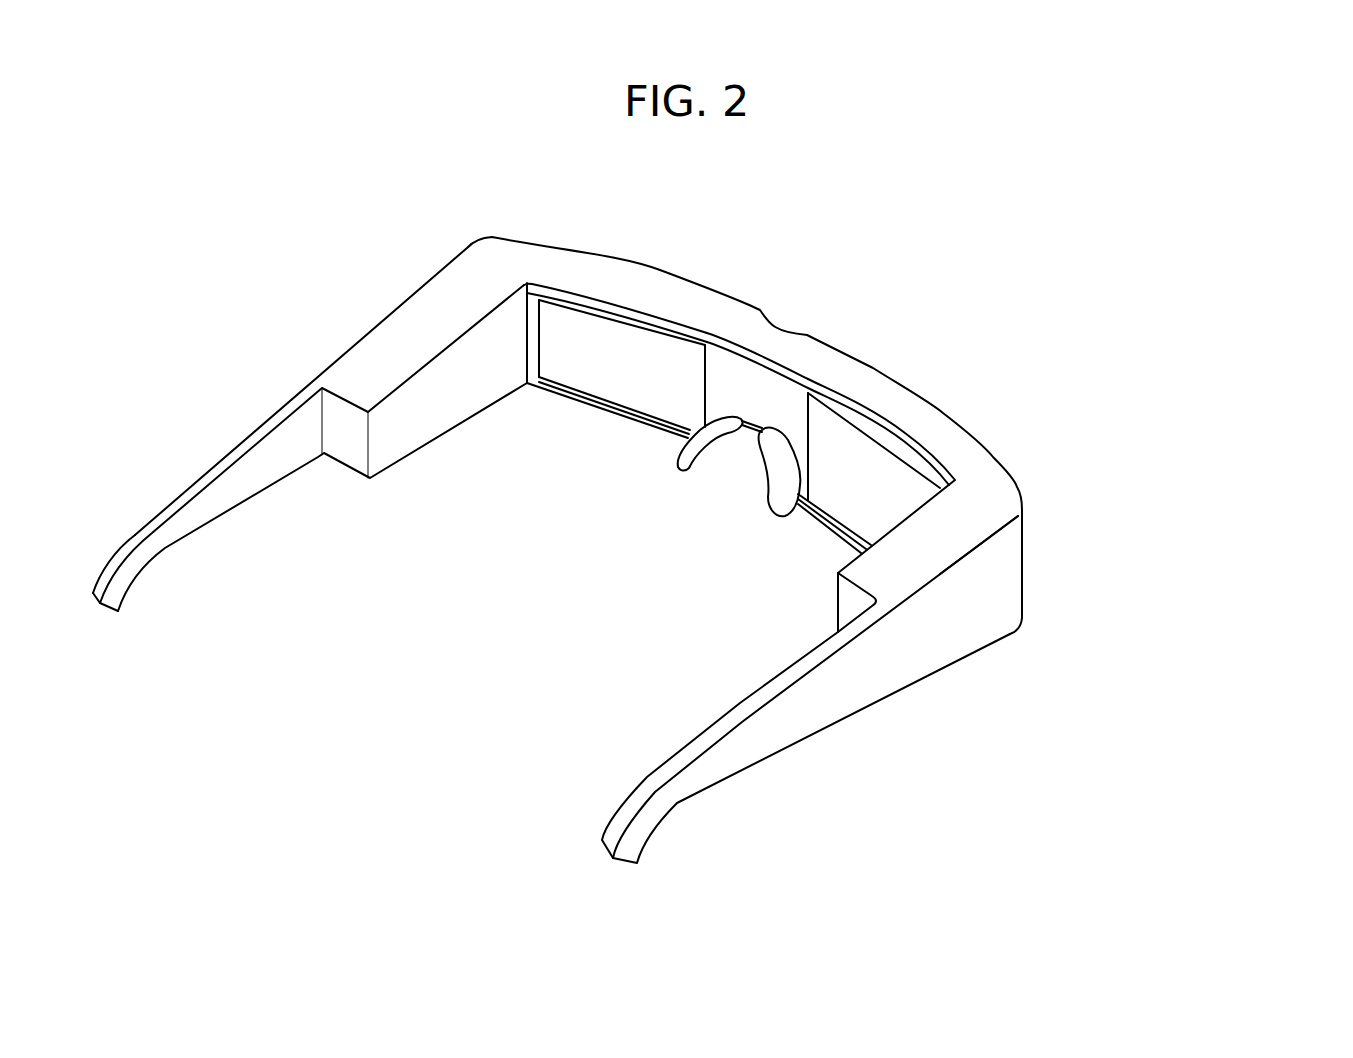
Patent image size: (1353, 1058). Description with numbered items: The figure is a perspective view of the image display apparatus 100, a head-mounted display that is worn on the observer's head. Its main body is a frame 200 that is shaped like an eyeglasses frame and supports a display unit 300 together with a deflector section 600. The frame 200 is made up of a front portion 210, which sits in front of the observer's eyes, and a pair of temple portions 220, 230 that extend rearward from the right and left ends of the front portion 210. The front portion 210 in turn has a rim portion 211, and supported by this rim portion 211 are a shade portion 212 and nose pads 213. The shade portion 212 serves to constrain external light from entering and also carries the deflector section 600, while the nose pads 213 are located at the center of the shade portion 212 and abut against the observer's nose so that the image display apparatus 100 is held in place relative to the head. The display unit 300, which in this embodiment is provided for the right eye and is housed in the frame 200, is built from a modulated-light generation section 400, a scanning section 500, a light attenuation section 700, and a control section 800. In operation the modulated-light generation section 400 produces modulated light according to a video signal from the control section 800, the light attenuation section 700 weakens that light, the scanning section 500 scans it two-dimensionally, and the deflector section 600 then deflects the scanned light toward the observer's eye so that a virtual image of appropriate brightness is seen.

The image display apparatus 100 is at (912, 278).
The frame 200 is at (913, 383).
The front portion 210 is at (790, 328).
The rim portion 211 is at (747, 322).
The shade portion 212 is at (743, 377).
The nose pads 213 is at (690, 456).
The temple portion 220 is at (752, 743).
The temple portion 230 is at (211, 503).
The deflector section 600 is at (848, 487).
The display unit 300 is at (1074, 613).
The modulated-light generation section 400 is at (1074, 613).
The scanning section 500 is at (1074, 613).
The light attenuation section 700 is at (1074, 613).
The control section 800 is at (950, 608).